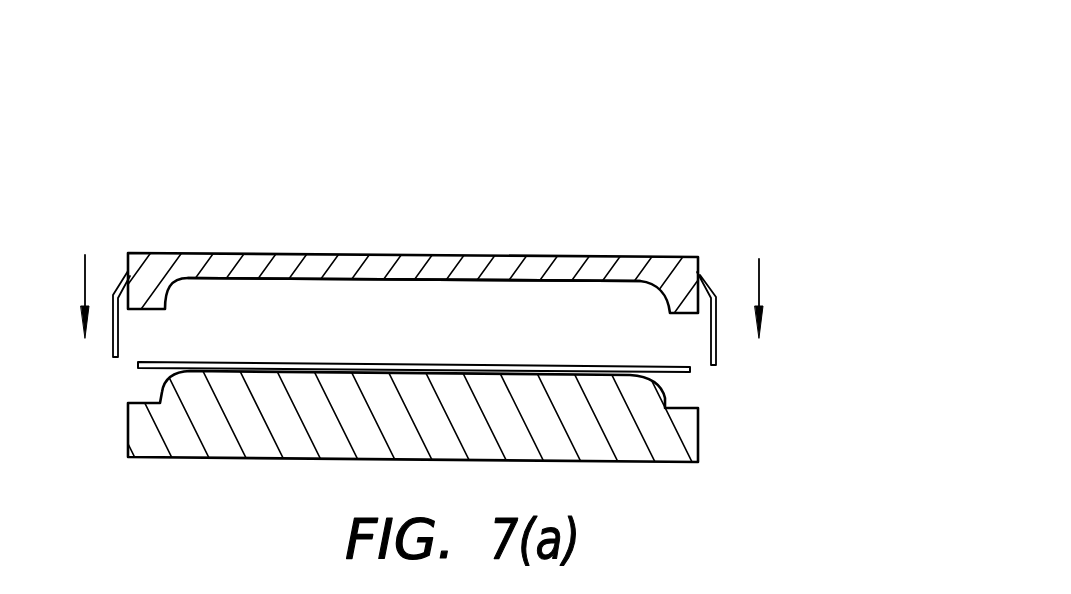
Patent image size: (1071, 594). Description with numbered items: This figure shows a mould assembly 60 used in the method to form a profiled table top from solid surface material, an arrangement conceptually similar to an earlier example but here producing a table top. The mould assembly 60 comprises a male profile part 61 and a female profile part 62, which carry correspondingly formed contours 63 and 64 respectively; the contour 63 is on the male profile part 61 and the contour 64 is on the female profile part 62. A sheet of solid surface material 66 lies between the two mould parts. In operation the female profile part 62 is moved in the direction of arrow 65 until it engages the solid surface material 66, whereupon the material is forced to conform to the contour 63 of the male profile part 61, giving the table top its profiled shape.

The mould assembly 60 is at (670, 163).
The male profile part 61 is at (704, 435).
The female profile part 62 is at (676, 268).
The contour 63 is at (665, 398).
The contour 64 is at (565, 258).
The arrow 65 is at (759, 285).
The solid surface material 66 is at (146, 368).